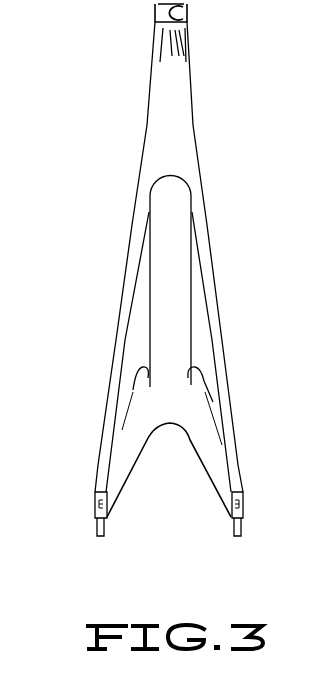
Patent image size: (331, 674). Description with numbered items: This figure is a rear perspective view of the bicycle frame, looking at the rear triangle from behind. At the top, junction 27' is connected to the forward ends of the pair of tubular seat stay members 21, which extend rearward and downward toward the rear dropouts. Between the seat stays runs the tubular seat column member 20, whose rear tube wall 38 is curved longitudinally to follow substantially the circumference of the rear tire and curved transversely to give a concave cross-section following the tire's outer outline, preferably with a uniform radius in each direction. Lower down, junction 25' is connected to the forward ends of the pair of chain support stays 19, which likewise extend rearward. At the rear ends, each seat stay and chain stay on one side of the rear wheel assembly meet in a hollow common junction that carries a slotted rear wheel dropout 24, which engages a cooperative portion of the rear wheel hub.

The junction 27' is at (178, 257).
The tubular seat column member 20 is at (168, 261).
The rear tube wall 38 is at (177, 297).
The tubular seat stay members 21 is at (250, 328).
The junction 25' is at (204, 405).
The chain support stays 19 is at (220, 478).
The rear wheel dropout 24 is at (236, 556).